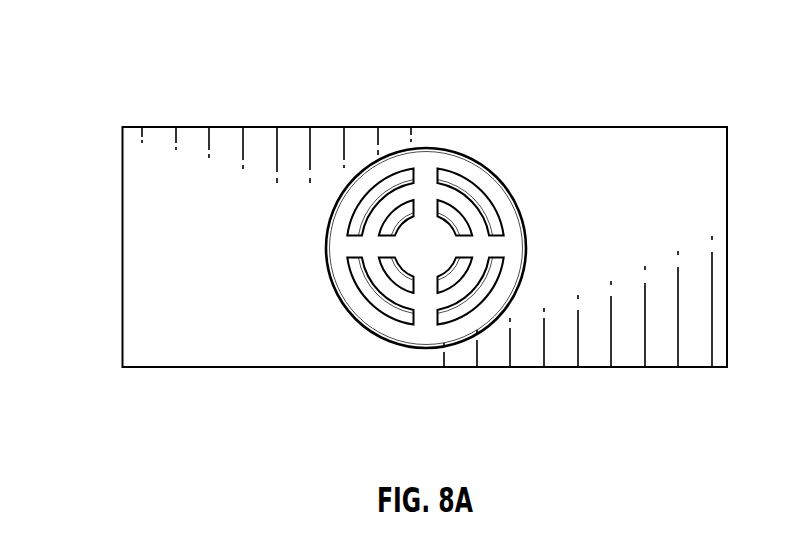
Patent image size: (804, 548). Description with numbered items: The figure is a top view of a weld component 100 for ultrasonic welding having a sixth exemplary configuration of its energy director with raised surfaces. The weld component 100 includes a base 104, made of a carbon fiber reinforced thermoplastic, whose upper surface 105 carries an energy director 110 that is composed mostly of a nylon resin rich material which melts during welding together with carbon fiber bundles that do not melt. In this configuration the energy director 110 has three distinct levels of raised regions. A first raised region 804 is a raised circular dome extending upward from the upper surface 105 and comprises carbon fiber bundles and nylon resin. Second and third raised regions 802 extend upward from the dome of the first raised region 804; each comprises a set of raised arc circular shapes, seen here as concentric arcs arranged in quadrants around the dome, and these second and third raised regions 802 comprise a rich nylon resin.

The weld component 100 is at (113, 33).
The base 104 is at (122, 185).
The upper surface 105 is at (190, 142).
The energy director 110 is at (320, 268).
The second and third raised regions 802 is at (436, 323).
The first raised region 804 is at (423, 238).